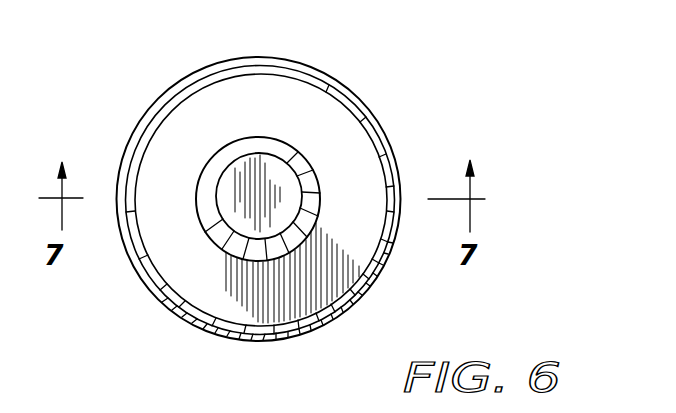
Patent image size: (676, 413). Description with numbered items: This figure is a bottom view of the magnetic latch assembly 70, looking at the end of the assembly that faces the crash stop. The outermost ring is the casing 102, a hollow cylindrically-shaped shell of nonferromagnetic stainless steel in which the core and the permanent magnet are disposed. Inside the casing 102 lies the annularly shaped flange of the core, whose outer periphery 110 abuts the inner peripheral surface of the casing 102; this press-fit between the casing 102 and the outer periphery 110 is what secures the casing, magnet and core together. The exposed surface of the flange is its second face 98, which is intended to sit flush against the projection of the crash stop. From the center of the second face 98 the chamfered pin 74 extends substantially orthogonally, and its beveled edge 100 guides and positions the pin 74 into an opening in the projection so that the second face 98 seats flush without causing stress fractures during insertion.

The magnetic latch assembly 70 is at (388, 281).
The casing 102 is at (358, 98).
The second face 98 is at (354, 153).
The outer periphery 110 is at (327, 90).
The beveled edge 100 is at (267, 149).
The chamfered pin 74 is at (233, 216).